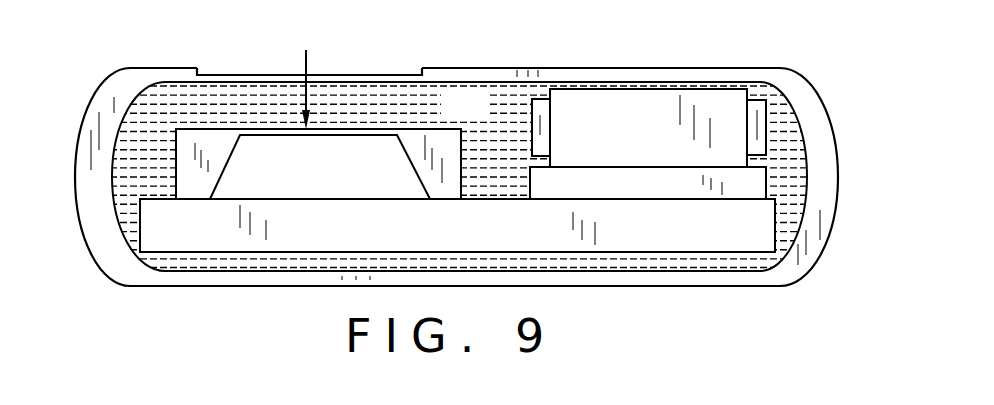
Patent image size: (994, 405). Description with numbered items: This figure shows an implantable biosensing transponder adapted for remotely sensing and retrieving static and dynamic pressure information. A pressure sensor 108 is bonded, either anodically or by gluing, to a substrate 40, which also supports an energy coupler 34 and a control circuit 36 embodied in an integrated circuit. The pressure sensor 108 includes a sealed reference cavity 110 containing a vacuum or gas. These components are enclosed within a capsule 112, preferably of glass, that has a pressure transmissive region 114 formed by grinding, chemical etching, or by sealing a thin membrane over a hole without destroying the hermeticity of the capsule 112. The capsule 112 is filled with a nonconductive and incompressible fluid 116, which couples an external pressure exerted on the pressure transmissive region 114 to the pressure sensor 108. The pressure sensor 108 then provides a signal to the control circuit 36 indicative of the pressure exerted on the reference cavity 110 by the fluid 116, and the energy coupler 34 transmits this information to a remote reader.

The energy coupler 34 is at (750, 90).
The control circuit 36 is at (773, 180).
The substrate 40 is at (792, 223).
The pressure sensor 108 is at (176, 162).
The sealed reference cavity 110 is at (338, 173).
The capsule 112 is at (632, 286).
The pressure transmissive region 114 is at (391, 75).
The nonconductive and incompressible fluid 116 is at (483, 115).